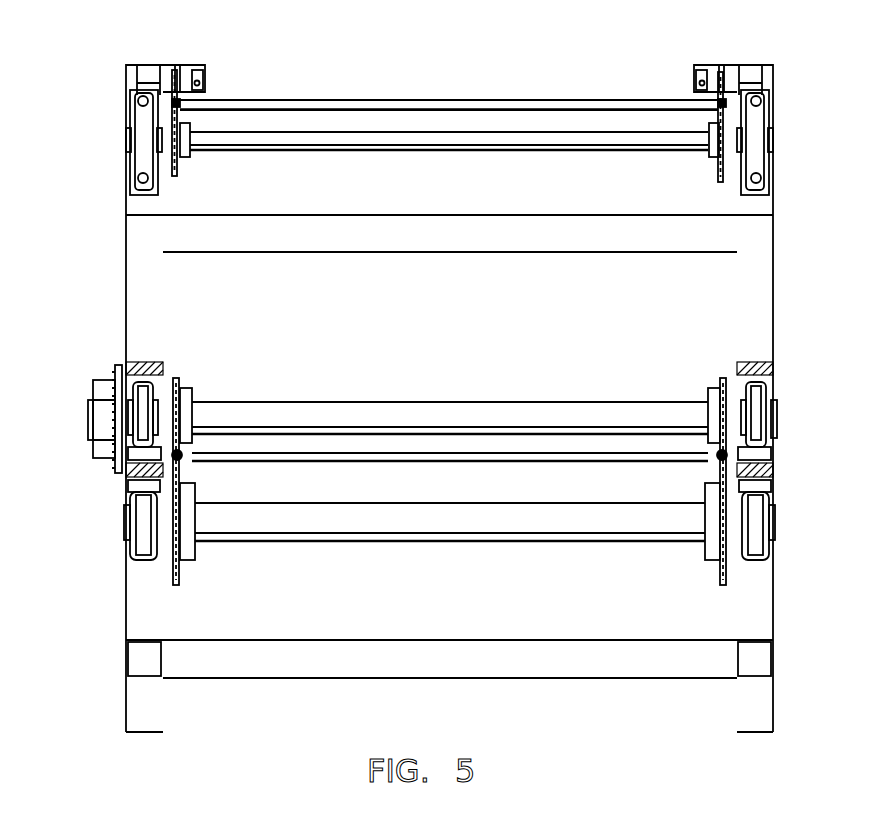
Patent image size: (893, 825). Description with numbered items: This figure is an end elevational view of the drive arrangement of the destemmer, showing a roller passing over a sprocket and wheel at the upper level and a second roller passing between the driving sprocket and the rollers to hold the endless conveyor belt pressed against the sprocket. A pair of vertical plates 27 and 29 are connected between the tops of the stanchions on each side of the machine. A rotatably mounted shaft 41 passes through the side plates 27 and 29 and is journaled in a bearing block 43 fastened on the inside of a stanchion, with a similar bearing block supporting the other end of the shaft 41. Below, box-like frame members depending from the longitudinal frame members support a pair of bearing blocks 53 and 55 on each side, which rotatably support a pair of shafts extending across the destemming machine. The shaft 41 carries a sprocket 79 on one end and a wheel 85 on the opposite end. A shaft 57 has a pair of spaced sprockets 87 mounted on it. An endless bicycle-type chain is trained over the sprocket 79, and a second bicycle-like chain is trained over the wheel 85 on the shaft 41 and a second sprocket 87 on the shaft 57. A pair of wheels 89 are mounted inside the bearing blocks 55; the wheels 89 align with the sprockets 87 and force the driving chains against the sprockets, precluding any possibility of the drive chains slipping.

The vertical plate 27 is at (172, 65).
The vertical plate 29 is at (718, 65).
The rotatably mounted shaft 41 is at (350, 152).
The bearing block 43 is at (143, 132).
The bearing block 53 is at (150, 385).
The bearing block 55 is at (150, 548).
The shaft 57 is at (475, 405).
The sprocket 79 is at (715, 150).
The wheel 85 is at (177, 168).
The sprocket 87 is at (183, 388).
The wheel 89 is at (178, 575).